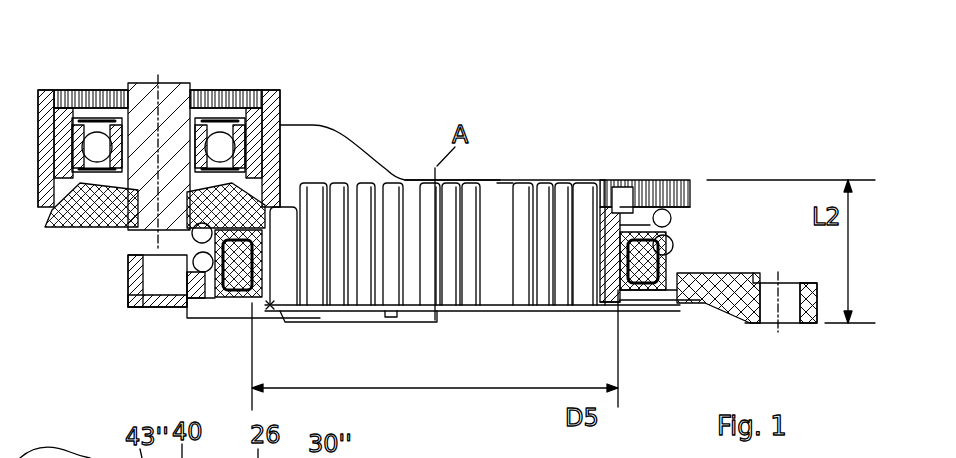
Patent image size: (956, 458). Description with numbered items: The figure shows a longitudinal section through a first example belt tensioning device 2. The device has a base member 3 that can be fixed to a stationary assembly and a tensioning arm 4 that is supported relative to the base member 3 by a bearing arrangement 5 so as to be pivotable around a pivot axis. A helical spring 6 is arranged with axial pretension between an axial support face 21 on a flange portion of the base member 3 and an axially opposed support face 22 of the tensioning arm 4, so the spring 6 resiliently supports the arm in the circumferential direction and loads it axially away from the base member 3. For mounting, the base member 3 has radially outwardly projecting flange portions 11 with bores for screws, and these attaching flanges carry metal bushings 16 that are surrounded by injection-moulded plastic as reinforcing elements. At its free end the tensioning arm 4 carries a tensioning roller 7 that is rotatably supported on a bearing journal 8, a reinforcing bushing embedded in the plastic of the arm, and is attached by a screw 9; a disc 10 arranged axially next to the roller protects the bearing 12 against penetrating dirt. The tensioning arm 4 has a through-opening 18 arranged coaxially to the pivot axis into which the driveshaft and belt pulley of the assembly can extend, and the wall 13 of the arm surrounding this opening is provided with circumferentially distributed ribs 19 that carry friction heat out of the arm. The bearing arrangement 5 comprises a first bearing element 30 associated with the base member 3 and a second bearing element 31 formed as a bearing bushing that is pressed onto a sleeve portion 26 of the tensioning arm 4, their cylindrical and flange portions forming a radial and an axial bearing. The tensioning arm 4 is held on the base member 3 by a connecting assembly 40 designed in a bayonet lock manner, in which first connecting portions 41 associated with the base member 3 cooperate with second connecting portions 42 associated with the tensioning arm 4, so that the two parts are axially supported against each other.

The belt tensioning device 2 is at (452, 90).
The base member 3 is at (158, 82).
The tensioning arm 4 is at (305, 142).
The bearing arrangement 5 is at (640, 213).
The spring 6 is at (673, 243).
The tensioning roller 7 is at (272, 90).
The bearing journal 8 is at (112, 195).
The screw 9 is at (180, 97).
The disc 10 is at (78, 100).
The flange portion 11 is at (810, 323).
The bearing 12 is at (218, 117).
The wall 13 is at (502, 287).
The bushing 16 is at (757, 323).
The through-opening 18 is at (522, 168).
The ribs 19 is at (472, 195).
The support face 21 is at (660, 272).
The support face 22 is at (675, 217).
The sleeve portion 26 is at (600, 222).
The first bearing element 30 is at (640, 280).
The second bearing element 31 is at (618, 210).
The connecting assembly 40 is at (273, 300).
The first connecting portion 41 is at (210, 290).
The second connecting portion 42 is at (243, 297).